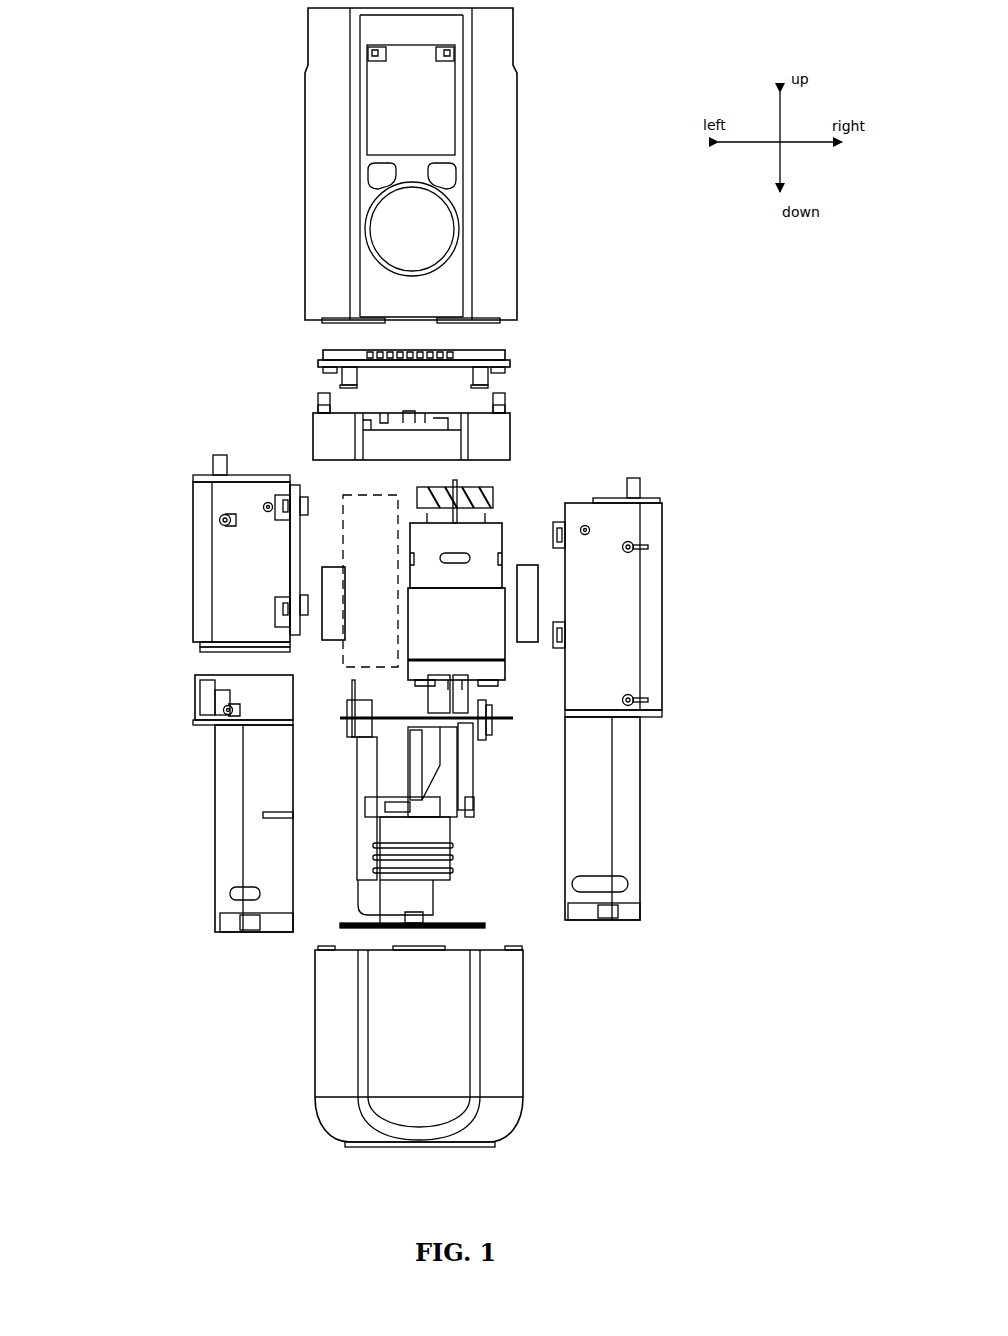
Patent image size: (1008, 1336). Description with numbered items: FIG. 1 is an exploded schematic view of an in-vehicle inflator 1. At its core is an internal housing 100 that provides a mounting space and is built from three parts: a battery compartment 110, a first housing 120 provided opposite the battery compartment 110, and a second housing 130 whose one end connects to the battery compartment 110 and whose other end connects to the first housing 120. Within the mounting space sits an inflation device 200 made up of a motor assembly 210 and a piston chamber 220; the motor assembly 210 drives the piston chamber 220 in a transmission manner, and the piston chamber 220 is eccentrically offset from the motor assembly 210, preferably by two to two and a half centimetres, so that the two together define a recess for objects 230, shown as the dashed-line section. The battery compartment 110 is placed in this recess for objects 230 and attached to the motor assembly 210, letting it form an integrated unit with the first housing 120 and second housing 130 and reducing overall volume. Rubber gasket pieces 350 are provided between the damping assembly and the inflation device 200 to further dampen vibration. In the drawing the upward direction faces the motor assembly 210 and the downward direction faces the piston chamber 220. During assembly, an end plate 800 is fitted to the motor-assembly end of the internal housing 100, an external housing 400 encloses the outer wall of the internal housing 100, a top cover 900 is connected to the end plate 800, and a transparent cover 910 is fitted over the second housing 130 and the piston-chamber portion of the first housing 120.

The in-vehicle inflator 1 is at (610, 88).
The internal housing 100 is at (117, 482).
The battery compartment 110 is at (226, 625).
The first housing 120 is at (578, 577).
The second housing 130 is at (258, 776).
The inflation device 200 is at (718, 740).
The motor assembly 210 is at (472, 640).
The piston chamber 220 is at (423, 830).
The recess for objects 230 is at (350, 510).
The gasket piece 350 is at (530, 597).
The external housing 400 is at (497, 252).
The end plate 800 is at (500, 442).
The top cover 900 is at (505, 342).
The transparent cover 910 is at (505, 1045).